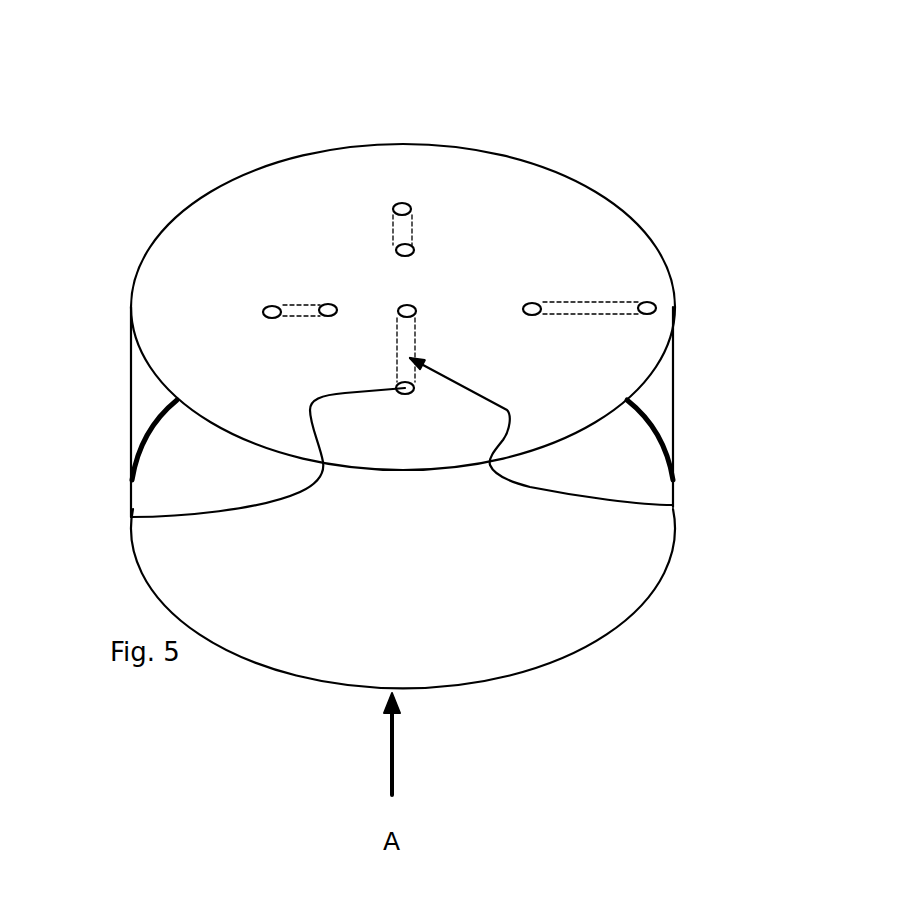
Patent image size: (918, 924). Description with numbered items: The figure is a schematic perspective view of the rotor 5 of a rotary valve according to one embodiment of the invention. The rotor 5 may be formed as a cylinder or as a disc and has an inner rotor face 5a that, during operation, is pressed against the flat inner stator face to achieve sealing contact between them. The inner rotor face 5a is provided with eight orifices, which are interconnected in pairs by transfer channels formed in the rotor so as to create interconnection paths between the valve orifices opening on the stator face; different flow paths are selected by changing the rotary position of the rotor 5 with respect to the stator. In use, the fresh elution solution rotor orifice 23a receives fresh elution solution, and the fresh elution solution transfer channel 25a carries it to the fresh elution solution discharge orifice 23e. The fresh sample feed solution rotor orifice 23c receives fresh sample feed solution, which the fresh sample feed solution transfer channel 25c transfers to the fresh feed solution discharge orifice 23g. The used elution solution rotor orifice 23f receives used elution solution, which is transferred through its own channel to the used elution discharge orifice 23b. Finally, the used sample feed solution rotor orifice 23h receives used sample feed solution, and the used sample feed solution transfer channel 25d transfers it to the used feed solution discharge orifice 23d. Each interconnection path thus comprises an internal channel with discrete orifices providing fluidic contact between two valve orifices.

The rotor 5 is at (530, 160).
The inner rotor face 5a is at (307, 185).
The fresh elution solution rotor orifice 23a is at (656, 307).
The used elution discharge orifice 23b is at (415, 310).
The fresh sample feed solution rotor orifice 23c is at (320, 305).
The used feed solution discharge orifice 23d is at (400, 208).
The fresh elution solution discharge orifice 23e is at (541, 306).
The used elution solution rotor orifice 23f is at (131, 517).
The fresh feed solution discharge orifice 23g is at (262, 307).
The used sample feed solution rotor orifice 23h is at (414, 250).
The fresh elution solution transfer channel 25a is at (600, 305).
The fresh sample feed solution transfer channel 25c is at (297, 318).
The used sample feed solution transfer channel 25d is at (418, 228).